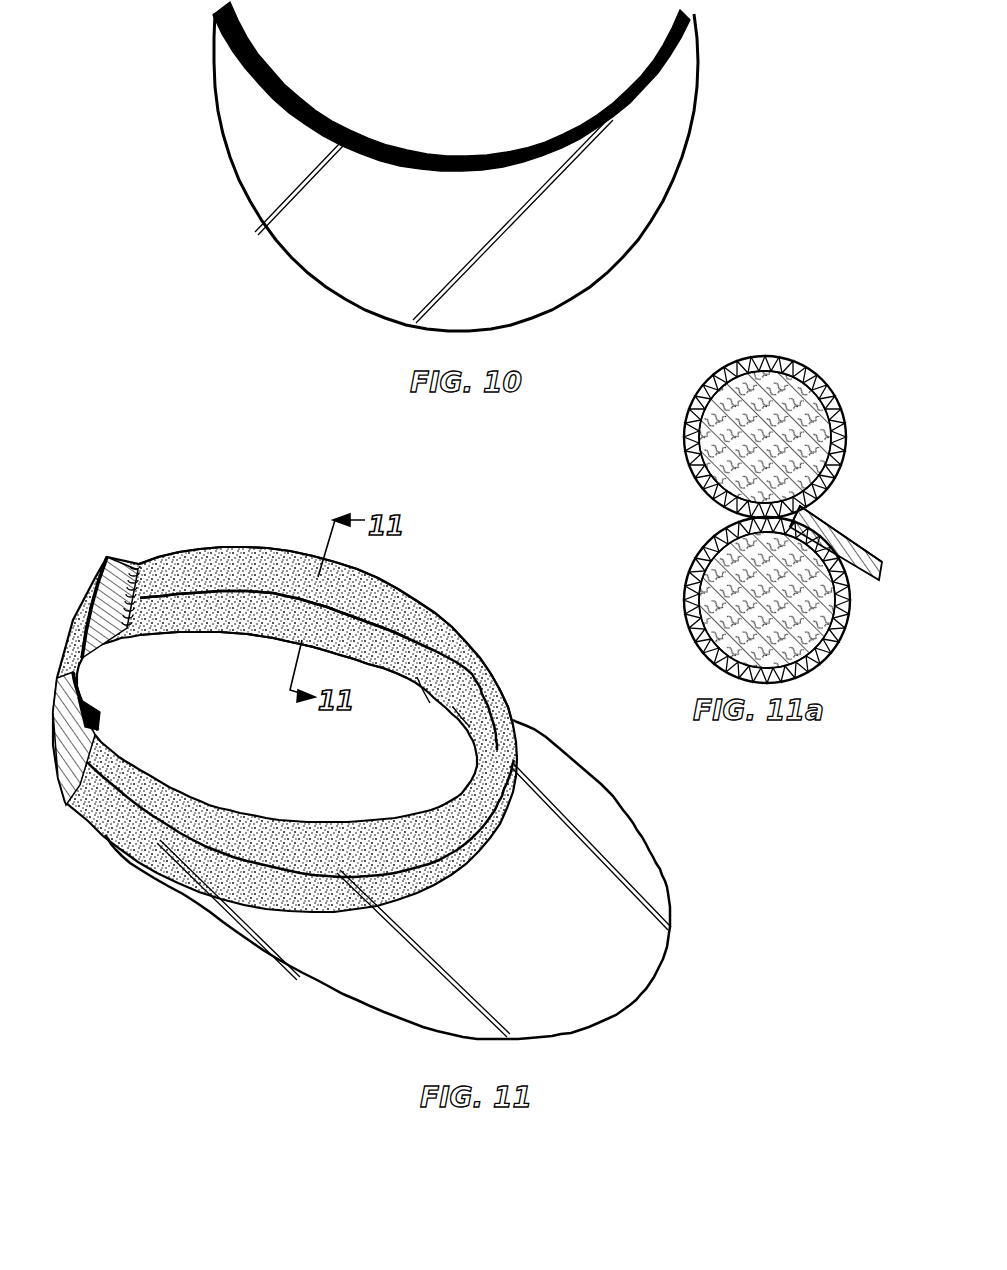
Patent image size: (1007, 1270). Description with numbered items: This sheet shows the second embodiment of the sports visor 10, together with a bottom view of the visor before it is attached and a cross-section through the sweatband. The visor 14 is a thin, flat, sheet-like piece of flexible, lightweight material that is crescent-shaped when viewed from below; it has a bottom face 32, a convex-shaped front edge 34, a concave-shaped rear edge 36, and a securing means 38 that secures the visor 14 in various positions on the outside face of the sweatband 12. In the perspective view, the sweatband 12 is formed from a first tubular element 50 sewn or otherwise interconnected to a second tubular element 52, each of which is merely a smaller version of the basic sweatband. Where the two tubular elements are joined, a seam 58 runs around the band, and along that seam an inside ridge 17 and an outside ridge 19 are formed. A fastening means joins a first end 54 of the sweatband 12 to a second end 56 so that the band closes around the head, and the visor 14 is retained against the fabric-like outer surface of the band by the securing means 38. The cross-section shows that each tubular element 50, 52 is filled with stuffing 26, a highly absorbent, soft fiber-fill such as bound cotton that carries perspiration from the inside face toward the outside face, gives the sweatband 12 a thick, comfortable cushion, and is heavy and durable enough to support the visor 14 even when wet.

In FIG. 11, the sports visor 10 is at (484, 640).
In FIG. 11, the sweatband 12 is at (370, 597).
In FIG. 11, the visor 14 is at (663, 863).
In FIG. 11A, the visor 14 is at (847, 537).
In FIG. 11, the inside ridge 17 is at (423, 693).
In FIG. 11, the outside ridge 19 is at (160, 833).
In FIG. 11A, the stuffing 26 is at (767, 377).
In FIG. 10, the bottom face 32 is at (322, 277).
In FIG. 10, the front edge 34 is at (570, 293).
In FIG. 10, the rear edge 36 is at (417, 147).
In FIG. 10, the securing means 38 is at (528, 133).
In FIG. 11A, the securing means 38 is at (817, 517).
In FIG. 11, the first tubular element 50 is at (245, 562).
In FIG. 11A, the first tubular element 50 is at (813, 387).
In FIG. 11, the second tubular element 52 is at (190, 633).
In FIG. 11A, the second tubular element 52 is at (837, 620).
In FIG. 11, the first end 54 is at (83, 780).
In FIG. 11, the second end 56 is at (137, 570).
In FIG. 11, the seam 58 is at (453, 710).